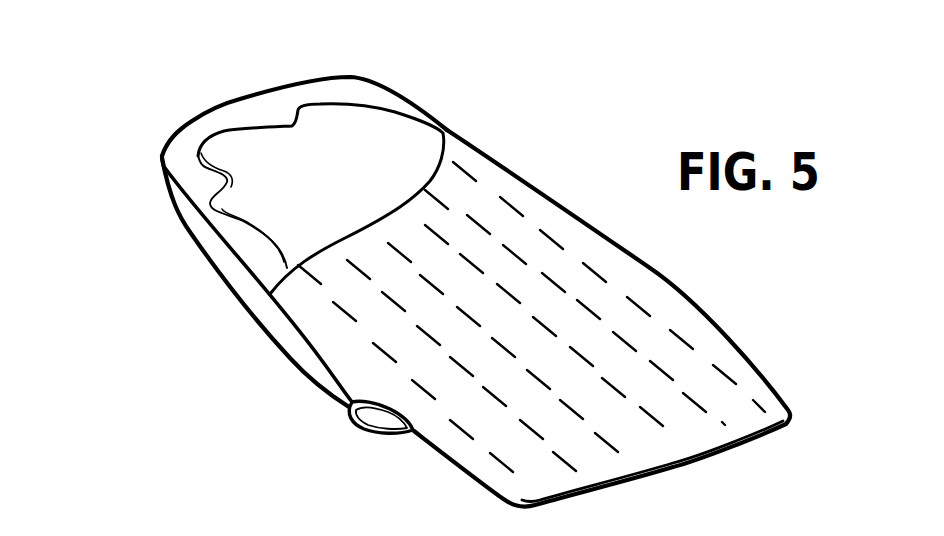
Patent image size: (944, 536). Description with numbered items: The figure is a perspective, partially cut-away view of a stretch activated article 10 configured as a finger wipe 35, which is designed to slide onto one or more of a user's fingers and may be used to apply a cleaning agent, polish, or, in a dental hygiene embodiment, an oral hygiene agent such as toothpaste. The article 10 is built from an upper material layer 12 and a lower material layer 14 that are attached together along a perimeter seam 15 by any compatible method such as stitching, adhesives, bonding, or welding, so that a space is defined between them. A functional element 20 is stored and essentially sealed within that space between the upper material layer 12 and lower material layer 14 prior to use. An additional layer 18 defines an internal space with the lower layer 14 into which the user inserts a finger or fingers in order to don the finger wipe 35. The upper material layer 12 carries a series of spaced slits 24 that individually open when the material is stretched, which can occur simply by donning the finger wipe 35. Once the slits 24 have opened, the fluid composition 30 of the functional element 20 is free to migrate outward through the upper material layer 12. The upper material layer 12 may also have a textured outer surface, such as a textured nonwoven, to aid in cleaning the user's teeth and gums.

The article 10 is at (158, 88).
The upper material layer 12 is at (683, 313).
The lower material layer 14 is at (260, 108).
The perimeter seam 15 is at (305, 343).
The additional layer 18 is at (380, 418).
The functional element 20 is at (350, 116).
The slits 24 is at (502, 200).
The fluid composition 30 is at (403, 138).
The finger wipe 35 is at (160, 153).